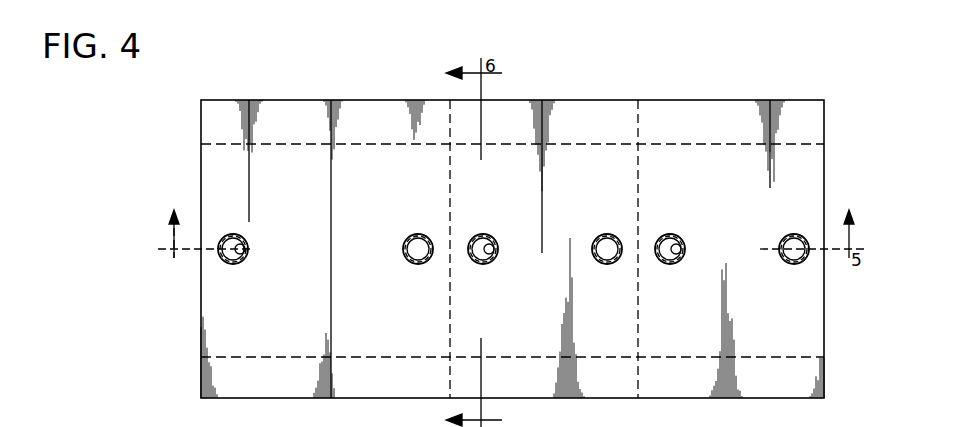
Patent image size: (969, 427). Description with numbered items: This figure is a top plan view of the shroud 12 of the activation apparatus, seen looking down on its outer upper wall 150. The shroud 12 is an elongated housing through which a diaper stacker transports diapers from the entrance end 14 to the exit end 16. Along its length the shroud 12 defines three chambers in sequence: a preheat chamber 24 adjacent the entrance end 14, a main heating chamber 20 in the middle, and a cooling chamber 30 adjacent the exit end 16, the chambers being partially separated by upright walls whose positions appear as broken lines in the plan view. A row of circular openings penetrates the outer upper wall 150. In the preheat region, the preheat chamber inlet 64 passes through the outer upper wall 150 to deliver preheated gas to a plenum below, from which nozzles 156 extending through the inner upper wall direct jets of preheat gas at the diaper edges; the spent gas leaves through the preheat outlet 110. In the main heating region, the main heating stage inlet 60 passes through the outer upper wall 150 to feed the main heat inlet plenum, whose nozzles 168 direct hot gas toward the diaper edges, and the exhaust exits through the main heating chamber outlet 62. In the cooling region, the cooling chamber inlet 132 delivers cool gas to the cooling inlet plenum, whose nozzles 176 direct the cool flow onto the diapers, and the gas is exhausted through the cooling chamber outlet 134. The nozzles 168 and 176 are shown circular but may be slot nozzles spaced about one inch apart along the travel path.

The shroud 12 is at (130, 128).
The entrance end 14 is at (201, 161).
The exit end 16 is at (825, 129).
The main heating chamber 20 is at (557, 181).
The preheat chamber 24 is at (295, 186).
The cooling chamber 30 is at (775, 171).
The outer upper wall 150 is at (700, 128).
The preheat chamber inlet 64 is at (232, 235).
The nozzles 156 is at (243, 254).
The preheat outlet 110 is at (418, 236).
The main heating stage inlet 60 is at (484, 236).
The nozzles 168 is at (493, 254).
The main heating chamber outlet 62 is at (606, 236).
The cooling chamber inlet 132 is at (677, 236).
The nozzles 176 is at (680, 254).
The cooling chamber outlet 134 is at (794, 236).